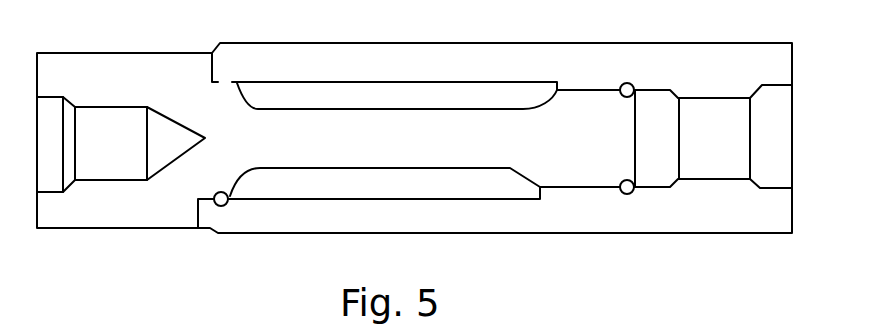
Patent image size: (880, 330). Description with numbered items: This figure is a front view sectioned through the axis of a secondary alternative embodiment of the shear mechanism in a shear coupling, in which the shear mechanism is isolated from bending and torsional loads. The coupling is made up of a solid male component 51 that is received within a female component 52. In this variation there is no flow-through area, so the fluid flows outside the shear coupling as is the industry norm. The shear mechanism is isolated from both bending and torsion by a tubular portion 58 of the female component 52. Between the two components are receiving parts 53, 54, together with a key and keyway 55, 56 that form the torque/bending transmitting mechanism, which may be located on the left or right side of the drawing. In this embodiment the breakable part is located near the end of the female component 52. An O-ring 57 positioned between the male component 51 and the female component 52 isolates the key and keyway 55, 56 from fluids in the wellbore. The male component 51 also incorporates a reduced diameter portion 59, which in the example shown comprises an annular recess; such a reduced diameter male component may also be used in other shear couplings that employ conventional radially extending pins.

The male component 51 is at (119, 132).
The female component 52 is at (578, 70).
The receiving part 53 is at (199, 197).
The receiving part 54 is at (224, 203).
The key 55 is at (605, 88).
The keyway 56 is at (657, 187).
The O-ring 57 is at (624, 193).
The tubular portion 58 is at (380, 93).
The reduced diameter portion 59 is at (429, 142).